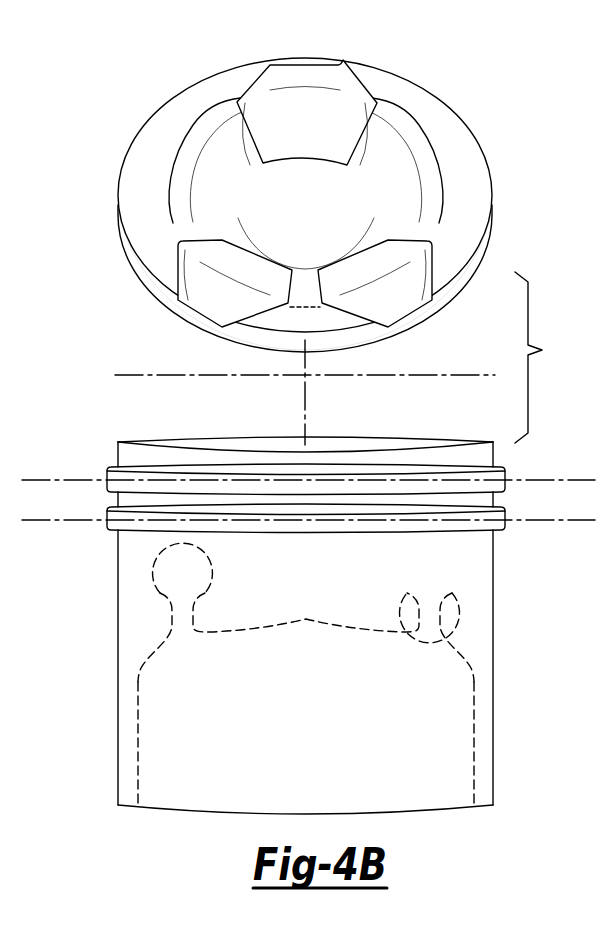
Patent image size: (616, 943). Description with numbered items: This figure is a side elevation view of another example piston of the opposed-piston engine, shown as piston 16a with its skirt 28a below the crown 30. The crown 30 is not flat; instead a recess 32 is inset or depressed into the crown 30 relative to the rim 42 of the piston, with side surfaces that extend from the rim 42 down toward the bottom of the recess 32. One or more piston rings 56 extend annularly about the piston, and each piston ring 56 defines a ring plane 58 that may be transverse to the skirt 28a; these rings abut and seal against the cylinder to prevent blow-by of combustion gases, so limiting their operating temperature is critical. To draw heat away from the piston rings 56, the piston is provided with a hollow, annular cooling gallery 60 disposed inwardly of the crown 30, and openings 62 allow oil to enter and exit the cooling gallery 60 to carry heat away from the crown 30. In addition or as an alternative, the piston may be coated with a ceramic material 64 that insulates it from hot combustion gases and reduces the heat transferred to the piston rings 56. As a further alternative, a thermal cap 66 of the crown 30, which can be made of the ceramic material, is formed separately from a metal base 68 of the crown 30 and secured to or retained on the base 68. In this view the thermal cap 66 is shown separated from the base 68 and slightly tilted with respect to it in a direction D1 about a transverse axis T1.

The crown 30 is at (188, 138).
The recess 32 is at (383, 135).
The rim 42 is at (492, 138).
The ceramic material 64 is at (490, 262).
The thermal cap 66 is at (136, 258).
The base 68 is at (116, 456).
The piston rings 56 is at (505, 476).
The ring plane 58 is at (30, 480).
The cooling gallery 60 is at (192, 576).
The openings 62 is at (184, 619).
The piston body 16a is at (110, 612).
The inner bore wall 28a is at (131, 706).
The transverse axis T1 is at (150, 372).
The direction D1 is at (449, 411).